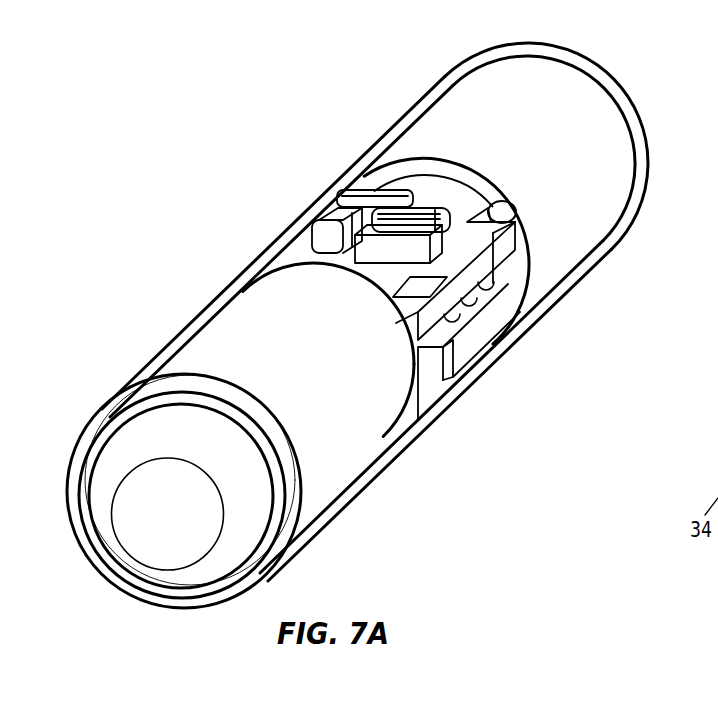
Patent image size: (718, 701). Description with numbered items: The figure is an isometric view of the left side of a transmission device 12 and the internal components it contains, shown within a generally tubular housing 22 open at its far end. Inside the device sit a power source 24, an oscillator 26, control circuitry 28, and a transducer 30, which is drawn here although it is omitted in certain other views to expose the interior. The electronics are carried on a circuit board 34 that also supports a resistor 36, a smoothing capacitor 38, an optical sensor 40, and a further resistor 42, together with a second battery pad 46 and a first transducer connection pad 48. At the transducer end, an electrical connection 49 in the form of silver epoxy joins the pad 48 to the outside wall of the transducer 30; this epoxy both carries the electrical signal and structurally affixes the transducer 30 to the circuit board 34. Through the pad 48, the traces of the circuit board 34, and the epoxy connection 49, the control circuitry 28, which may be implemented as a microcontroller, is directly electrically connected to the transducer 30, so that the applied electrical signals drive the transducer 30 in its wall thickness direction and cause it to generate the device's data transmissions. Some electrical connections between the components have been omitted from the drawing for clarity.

The transmission device 12 is at (332, 103).
The tubular housing 22 is at (343, 510).
The power source 24 is at (233, 330).
The oscillator 26 is at (430, 388).
The control circuitry 28 is at (468, 347).
The transducer 30 is at (452, 130).
The circuit board 34 is at (507, 250).
The resistor 36 is at (328, 240).
The smoothing capacitor 38 is at (358, 193).
The optical sensor 40 is at (378, 251).
The resistor 42 is at (445, 242).
The second battery pad 46 is at (468, 312).
The first transducer connection pad 48 is at (478, 208).
The electrical connection 49 is at (500, 212).